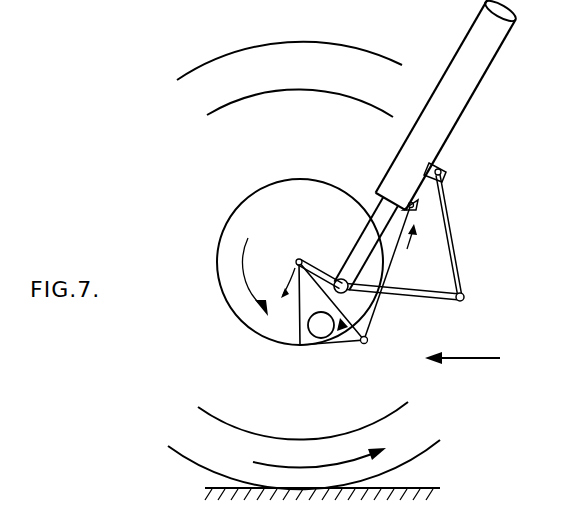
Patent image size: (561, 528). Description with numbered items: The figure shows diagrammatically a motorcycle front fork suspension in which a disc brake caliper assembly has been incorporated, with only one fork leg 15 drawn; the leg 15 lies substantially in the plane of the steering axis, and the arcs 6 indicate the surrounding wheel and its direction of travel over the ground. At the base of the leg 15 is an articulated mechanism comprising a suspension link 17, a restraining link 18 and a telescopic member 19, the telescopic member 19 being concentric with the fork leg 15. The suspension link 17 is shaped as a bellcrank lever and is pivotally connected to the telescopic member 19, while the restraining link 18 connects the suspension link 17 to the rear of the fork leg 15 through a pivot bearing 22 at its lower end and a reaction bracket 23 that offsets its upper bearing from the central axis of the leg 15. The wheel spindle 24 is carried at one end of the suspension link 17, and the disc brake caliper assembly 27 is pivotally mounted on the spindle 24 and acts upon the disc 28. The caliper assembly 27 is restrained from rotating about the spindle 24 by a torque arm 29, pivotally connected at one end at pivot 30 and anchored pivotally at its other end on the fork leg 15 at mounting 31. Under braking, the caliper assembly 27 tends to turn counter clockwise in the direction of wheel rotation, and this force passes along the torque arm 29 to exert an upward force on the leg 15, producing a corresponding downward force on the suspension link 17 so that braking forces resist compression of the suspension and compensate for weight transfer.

The arcuate guide track 6 is at (336, 48).
The fork leg 15 is at (468, 60).
The suspension link 17 is at (320, 272).
The restraining link 18 is at (457, 246).
The telescopic member 19 is at (373, 207).
The pivot bearing 22 is at (464, 300).
The reaction bracket 23 is at (446, 164).
The wheel spindle 24 is at (299, 258).
The disc brake caliper assembly 27 is at (330, 344).
The disc 28 is at (257, 200).
The torque arm 29 is at (405, 252).
The pivot 30 is at (367, 343).
The mounting 31 is at (412, 206).